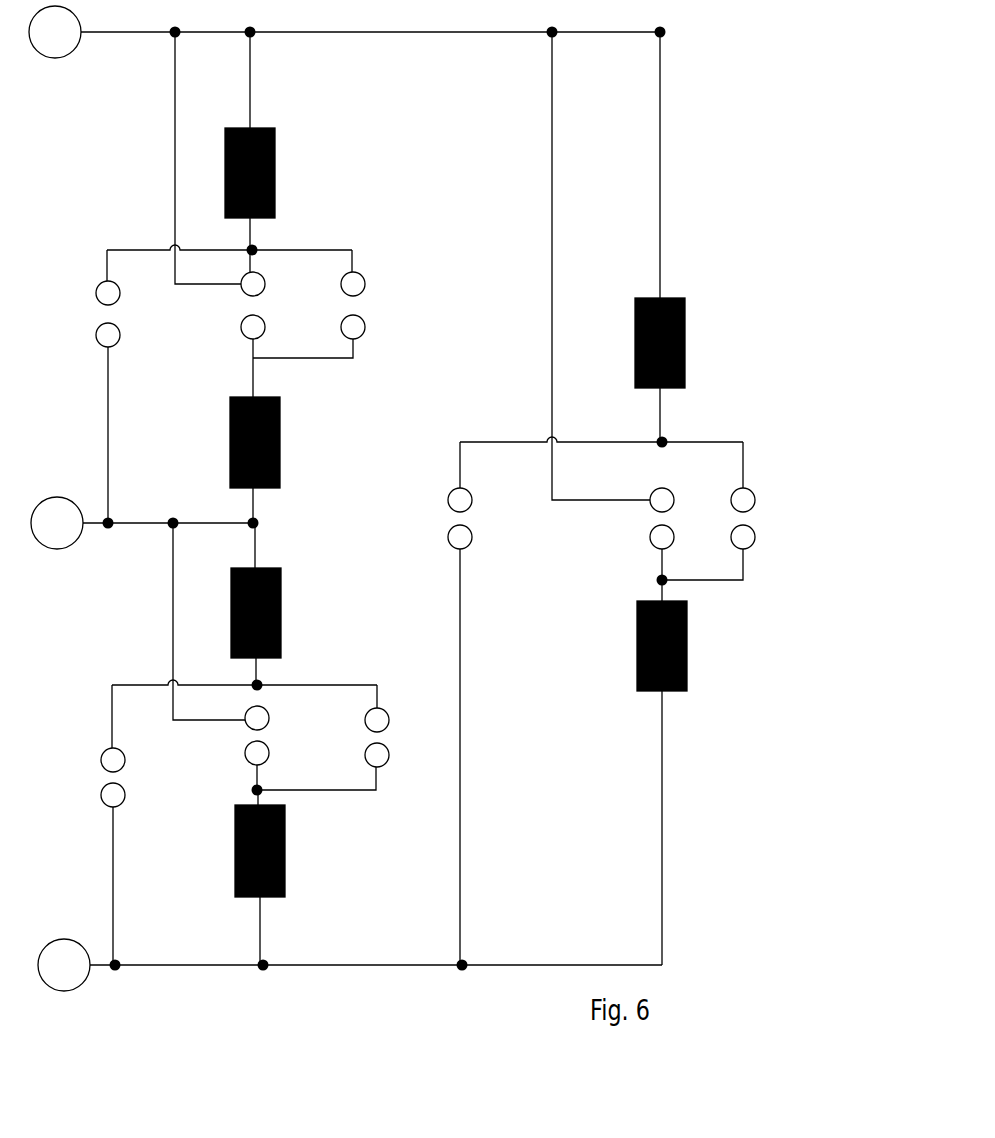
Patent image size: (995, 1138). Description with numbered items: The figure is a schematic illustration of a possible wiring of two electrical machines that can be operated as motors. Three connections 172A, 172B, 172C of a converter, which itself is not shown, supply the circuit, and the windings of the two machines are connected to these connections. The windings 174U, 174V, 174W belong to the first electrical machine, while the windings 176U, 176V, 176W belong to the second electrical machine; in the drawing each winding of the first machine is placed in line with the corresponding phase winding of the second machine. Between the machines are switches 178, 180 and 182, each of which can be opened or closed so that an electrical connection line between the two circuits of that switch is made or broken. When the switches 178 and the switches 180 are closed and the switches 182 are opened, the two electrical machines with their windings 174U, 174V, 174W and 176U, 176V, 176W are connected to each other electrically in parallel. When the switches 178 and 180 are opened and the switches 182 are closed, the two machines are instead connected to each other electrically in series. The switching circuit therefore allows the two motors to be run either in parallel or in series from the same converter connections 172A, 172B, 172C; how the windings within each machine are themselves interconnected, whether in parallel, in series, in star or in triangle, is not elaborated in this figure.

The converter connection 172A is at (57, 37).
The converter connection 172B is at (57, 535).
The converter connection 172C is at (65, 977).
The winding of the first electrical machine 174U is at (276, 167).
The winding of the second electrical machine 176U is at (280, 454).
The winding of the first electrical machine 174V is at (280, 605).
The winding of the second electrical machine 176V is at (285, 824).
The winding of the first electrical machine 174W is at (685, 365).
The winding of the second electrical machine 176W is at (690, 647).
The switch 178 is at (100, 316).
The switch 180 is at (245, 307).
The switch 182 is at (357, 305).